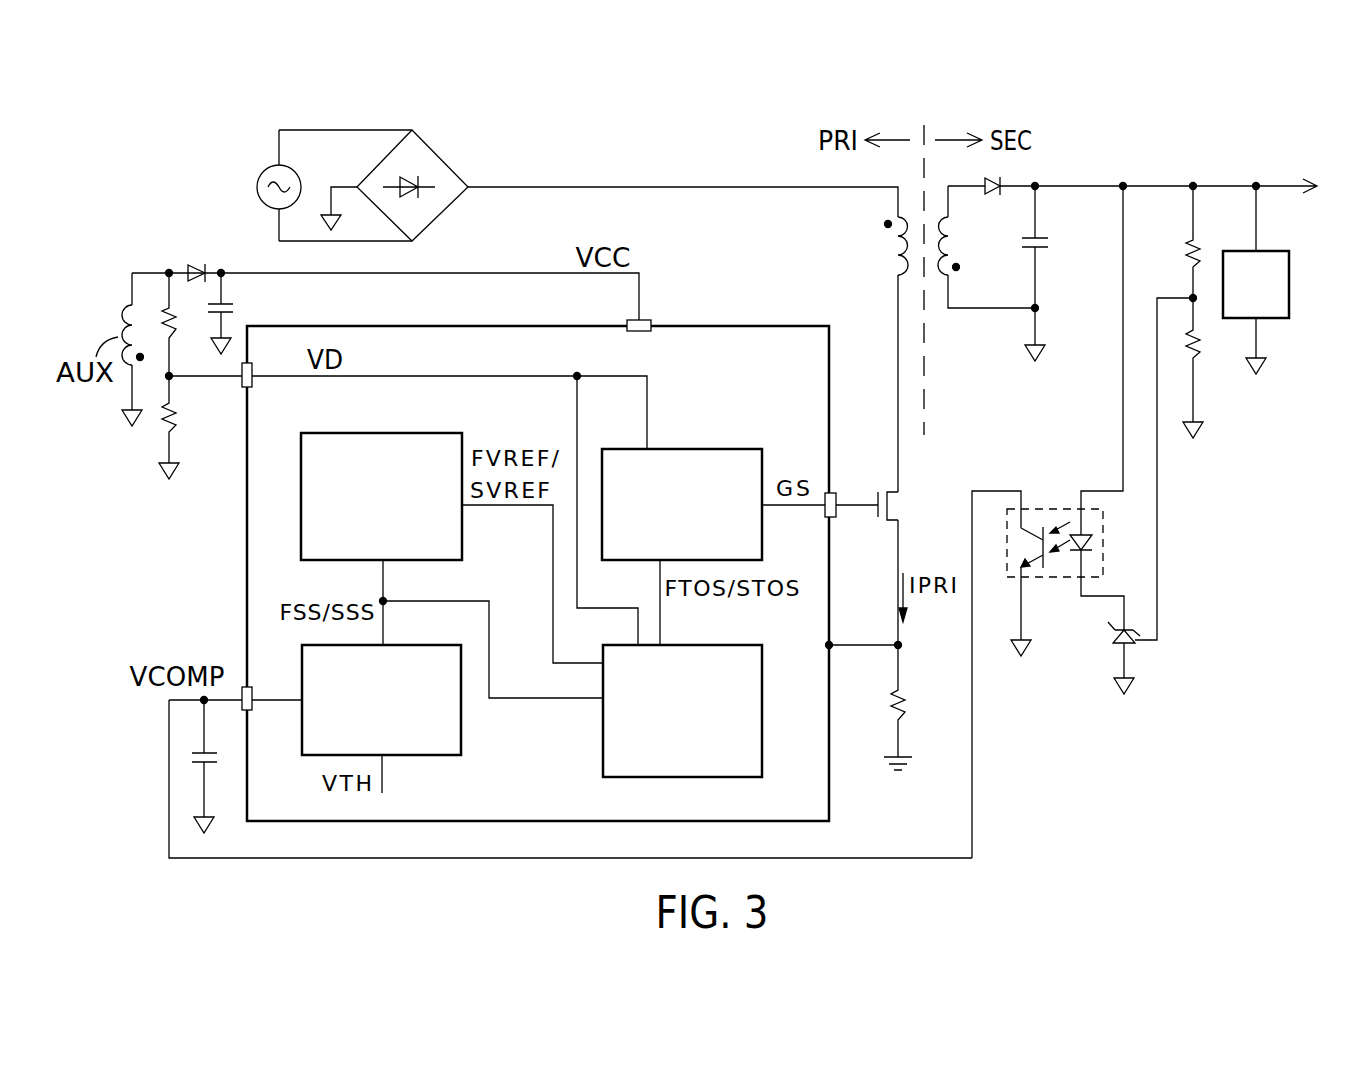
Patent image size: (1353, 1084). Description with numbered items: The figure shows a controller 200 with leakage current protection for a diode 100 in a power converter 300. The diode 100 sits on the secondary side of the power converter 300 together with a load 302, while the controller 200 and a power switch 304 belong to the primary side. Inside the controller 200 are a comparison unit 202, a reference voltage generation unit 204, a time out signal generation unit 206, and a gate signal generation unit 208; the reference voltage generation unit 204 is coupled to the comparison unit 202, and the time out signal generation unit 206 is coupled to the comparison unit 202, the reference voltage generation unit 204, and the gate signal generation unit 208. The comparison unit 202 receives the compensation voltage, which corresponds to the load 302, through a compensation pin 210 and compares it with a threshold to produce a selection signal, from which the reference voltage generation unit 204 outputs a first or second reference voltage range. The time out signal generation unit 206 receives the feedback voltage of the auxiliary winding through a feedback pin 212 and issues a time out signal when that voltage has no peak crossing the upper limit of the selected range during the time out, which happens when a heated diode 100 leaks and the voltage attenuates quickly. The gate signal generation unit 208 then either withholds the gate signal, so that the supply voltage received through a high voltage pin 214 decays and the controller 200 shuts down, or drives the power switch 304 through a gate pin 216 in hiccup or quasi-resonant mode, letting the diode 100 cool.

The diode 100 is at (991, 200).
The controller 200 is at (726, 320).
The comparison unit 202 is at (410, 645).
The reference voltage generation unit 204 is at (410, 432).
The time out signal generation unit 206 is at (710, 644).
The gate signal generation unit 208 is at (710, 448).
The compensation pin 210 is at (253, 709).
The feedback pin 212 is at (253, 387).
The high voltage pin 214 is at (641, 331).
The gate pin 216 is at (836, 516).
The power converter 300 is at (1222, 135).
The load 302 is at (1290, 275).
The power switch 304 is at (903, 505).